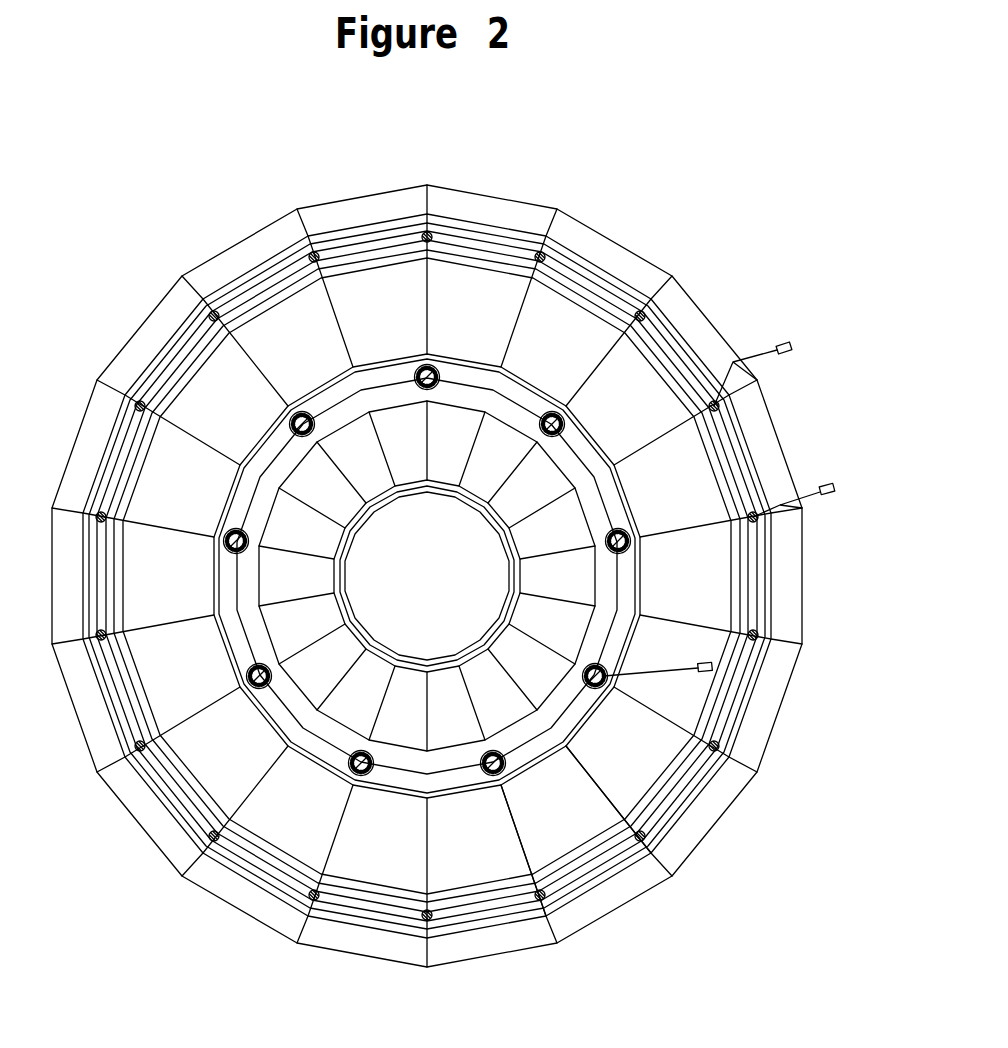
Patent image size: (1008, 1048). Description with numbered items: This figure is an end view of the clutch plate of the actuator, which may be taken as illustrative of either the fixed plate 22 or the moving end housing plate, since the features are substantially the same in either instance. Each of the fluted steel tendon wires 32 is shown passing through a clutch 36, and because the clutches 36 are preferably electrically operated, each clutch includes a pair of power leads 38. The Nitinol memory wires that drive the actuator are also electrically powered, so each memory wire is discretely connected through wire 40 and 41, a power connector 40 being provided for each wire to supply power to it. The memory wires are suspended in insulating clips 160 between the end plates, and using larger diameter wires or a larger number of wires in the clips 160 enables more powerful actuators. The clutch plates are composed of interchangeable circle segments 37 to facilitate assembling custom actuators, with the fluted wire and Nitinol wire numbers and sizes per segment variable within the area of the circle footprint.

The fixed plate 22 is at (481, 195).
The fluted steel tendon wire 32 is at (463, 344).
The clutch 36 is at (592, 401).
The interchangeable circle segment 37 is at (585, 841).
The power lead 38 is at (693, 682).
The power connector 40 is at (744, 407).
The power connector wire 41 is at (770, 482).
The insulating clip 160 is at (716, 800).